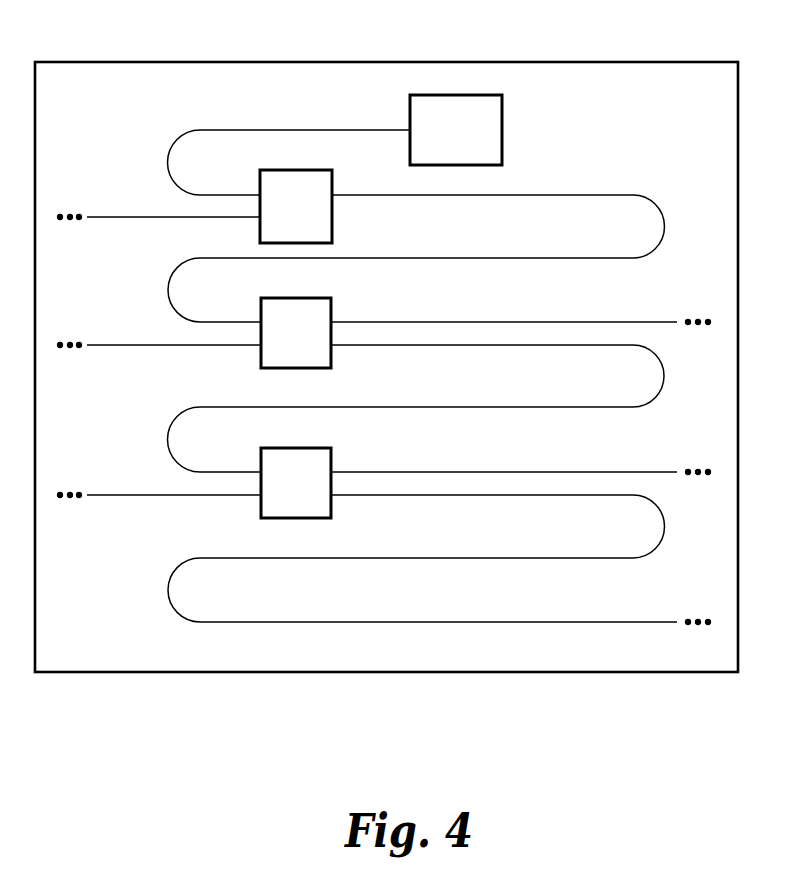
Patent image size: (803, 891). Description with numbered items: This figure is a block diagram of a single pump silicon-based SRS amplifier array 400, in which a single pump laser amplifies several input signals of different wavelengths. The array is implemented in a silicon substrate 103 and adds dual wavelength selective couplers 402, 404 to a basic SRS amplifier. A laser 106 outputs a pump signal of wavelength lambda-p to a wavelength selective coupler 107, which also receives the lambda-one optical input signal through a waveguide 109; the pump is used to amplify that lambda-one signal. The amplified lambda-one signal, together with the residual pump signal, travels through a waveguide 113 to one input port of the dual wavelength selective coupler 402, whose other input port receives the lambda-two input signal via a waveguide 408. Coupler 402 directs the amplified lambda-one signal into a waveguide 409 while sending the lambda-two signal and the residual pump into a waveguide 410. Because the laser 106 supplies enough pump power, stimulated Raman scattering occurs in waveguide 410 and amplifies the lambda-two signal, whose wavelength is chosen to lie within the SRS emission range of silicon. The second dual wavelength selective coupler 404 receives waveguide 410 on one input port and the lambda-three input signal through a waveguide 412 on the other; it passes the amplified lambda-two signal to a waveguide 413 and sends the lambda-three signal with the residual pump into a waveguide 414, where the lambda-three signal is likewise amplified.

The single pump silicon-based SRS amplifier array 400 is at (563, 708).
The silicon substrate 103 is at (103, 641).
The laser 106 is at (502, 112).
The wavelength selective coupler 107 is at (334, 218).
The waveguide 109 is at (125, 218).
The waveguide 113 is at (472, 196).
The waveguide 408 is at (125, 346).
The dual wavelength selective coupler 402 is at (334, 358).
The waveguide 409 is at (472, 321).
The waveguide 410 is at (472, 346).
The waveguide 412 is at (125, 496).
The dual wavelength selective coupler 404 is at (334, 508).
The waveguide 413 is at (472, 471).
The waveguide 414 is at (472, 496).